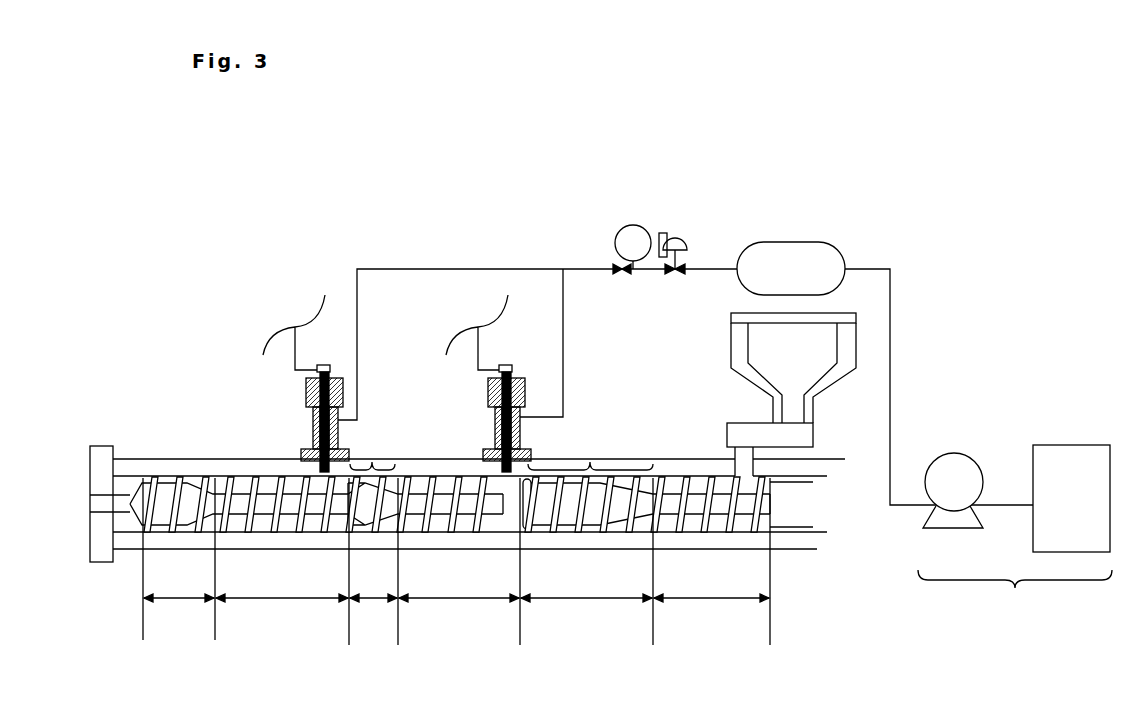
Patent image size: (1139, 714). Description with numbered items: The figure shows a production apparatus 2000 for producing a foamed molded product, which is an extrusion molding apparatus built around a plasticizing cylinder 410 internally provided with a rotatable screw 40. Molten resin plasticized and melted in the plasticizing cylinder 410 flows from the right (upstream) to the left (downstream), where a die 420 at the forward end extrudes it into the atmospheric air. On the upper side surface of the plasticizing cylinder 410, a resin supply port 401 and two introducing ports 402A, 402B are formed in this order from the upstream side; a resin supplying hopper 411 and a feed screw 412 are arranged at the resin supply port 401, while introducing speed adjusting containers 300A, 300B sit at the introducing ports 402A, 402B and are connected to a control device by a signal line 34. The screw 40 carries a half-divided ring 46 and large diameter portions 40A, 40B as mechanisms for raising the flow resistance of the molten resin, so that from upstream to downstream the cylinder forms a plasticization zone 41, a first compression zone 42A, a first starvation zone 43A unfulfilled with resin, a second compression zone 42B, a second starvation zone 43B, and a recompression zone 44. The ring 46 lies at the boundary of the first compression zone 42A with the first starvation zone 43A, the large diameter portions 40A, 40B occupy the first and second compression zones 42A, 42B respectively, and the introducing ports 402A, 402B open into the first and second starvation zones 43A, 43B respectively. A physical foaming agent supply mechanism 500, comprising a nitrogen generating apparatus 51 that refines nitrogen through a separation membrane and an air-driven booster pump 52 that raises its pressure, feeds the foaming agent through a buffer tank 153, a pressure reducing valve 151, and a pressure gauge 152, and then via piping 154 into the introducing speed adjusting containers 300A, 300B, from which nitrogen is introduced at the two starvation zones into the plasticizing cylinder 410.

The production apparatus 2000 is at (958, 302).
The plasticizing cylinder 410 is at (245, 466).
The die 420 is at (103, 457).
The screw 40 is at (148, 498).
The recompression zone 44 is at (179, 559).
The second starvation zone 43B is at (282, 561).
The second compression zone 42B is at (374, 561).
The first starvation zone 43A is at (459, 561).
The first compression zone 42A is at (587, 561).
The plasticization zone 41 is at (712, 561).
The large diameter portion 40B is at (372, 462).
The large diameter portion 40A is at (590, 462).
The ring 46 is at (521, 533).
The introducing port 402B is at (310, 432).
The introducing port 402A is at (492, 432).
The introducing speed adjusting container 300B is at (338, 378).
The introducing speed adjusting container 300A is at (525, 378).
The signal line 34 is at (298, 338).
The piping 154 is at (360, 312).
The pressure gauge 152 is at (636, 226).
The pressure reducing valve 151 is at (686, 241).
The buffer tank 153 is at (782, 260).
The resin supplying hopper 411 is at (847, 342).
The feed screw 412 is at (780, 433).
The resin supply port 401 is at (740, 462).
The physical foaming agent supply mechanism 500 is at (1015, 504).
The air-driven booster pump 52 is at (952, 468).
The nitrogen generating apparatus 51 is at (1068, 462).